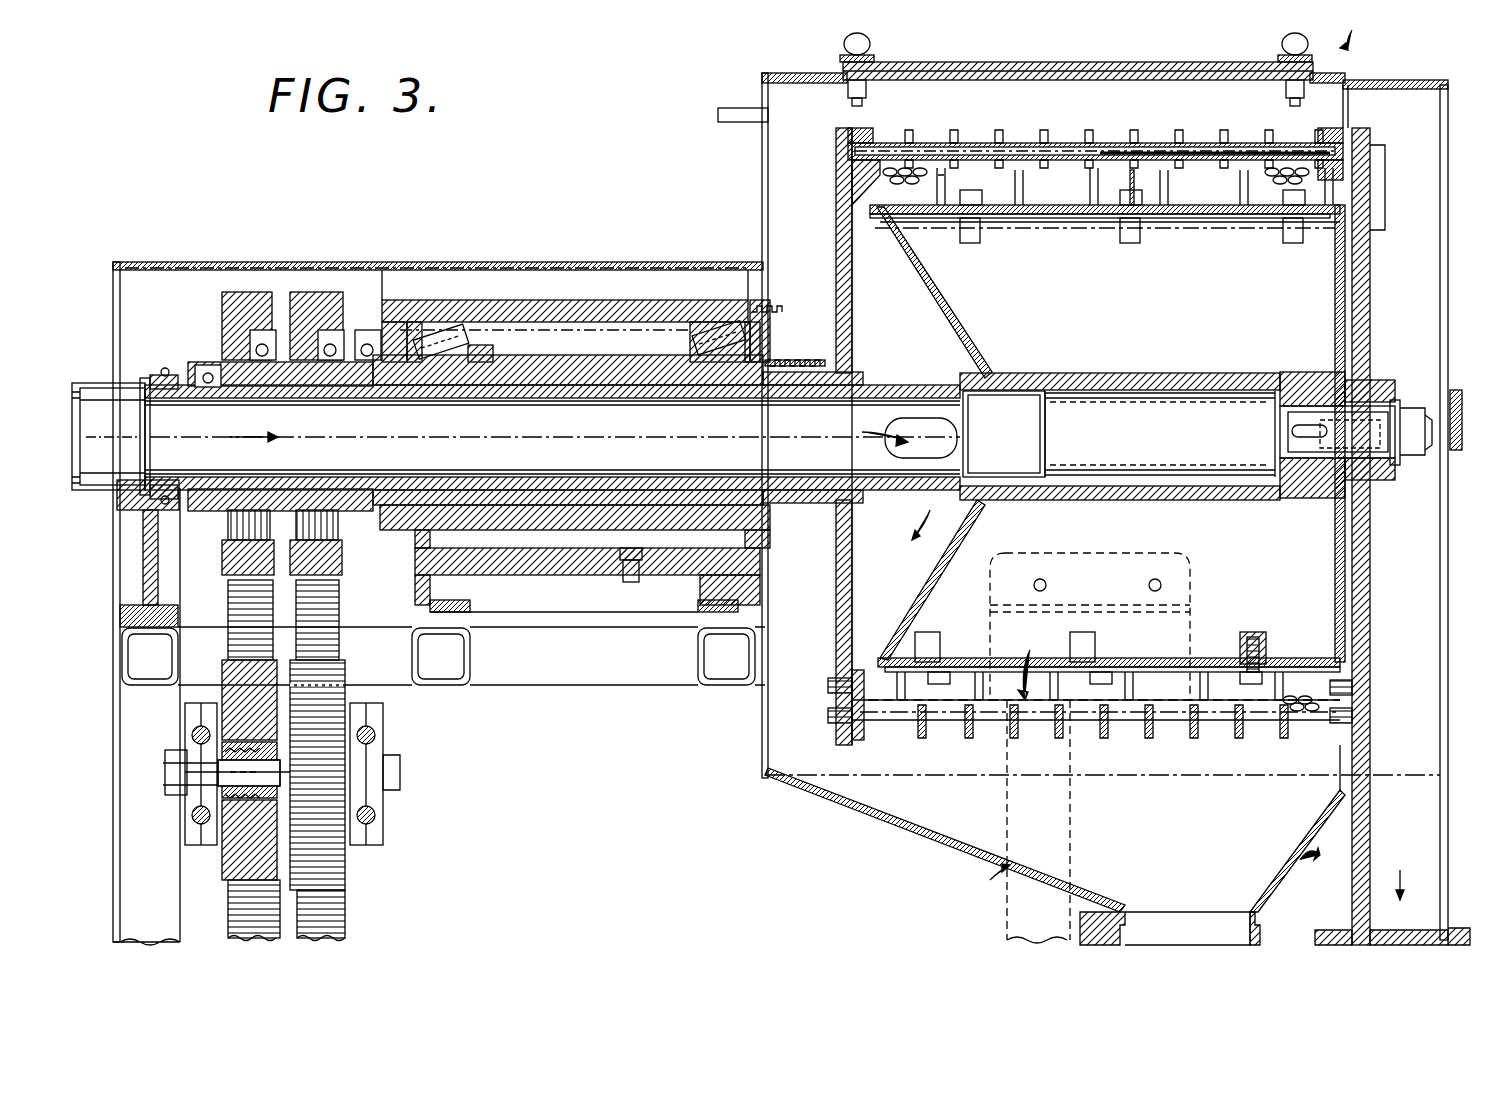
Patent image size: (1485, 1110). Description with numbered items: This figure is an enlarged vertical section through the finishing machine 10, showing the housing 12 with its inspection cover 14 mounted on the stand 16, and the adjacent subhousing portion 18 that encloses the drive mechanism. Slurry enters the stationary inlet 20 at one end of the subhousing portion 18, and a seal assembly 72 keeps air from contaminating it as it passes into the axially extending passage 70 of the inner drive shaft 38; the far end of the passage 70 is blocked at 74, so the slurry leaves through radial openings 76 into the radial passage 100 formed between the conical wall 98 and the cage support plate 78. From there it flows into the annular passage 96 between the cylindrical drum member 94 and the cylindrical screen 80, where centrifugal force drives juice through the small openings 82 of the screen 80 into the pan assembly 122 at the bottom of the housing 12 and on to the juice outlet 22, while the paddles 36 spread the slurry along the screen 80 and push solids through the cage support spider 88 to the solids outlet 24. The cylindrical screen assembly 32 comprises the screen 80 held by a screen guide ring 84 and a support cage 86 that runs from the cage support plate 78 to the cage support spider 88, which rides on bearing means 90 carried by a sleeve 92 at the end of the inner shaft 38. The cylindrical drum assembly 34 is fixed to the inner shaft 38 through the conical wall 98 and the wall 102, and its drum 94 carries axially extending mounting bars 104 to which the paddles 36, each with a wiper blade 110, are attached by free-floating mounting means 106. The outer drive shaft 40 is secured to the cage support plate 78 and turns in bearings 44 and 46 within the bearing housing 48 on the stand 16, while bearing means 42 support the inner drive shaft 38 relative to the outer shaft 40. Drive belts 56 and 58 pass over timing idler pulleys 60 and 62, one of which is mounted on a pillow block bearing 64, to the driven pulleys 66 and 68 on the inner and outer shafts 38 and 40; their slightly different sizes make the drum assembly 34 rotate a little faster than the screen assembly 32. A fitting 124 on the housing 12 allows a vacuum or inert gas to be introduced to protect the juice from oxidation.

The finishing machine 10 is at (1361, 32).
The housing 12 is at (1400, 84).
The inspection cover 14 is at (1075, 62).
The stand 16 is at (1005, 918).
The subhousing portion 18 is at (495, 265).
The inlet 20 is at (112, 478).
The juice outlet 22 is at (1210, 912).
The solids outlet 24 is at (1400, 925).
The cylindrical screen assembly 32 is at (1372, 175).
The cylindrical drum assembly 34 is at (1350, 197).
The paddles 36 is at (1025, 184).
The inner drive shaft 38 is at (545, 488).
The outer drive shaft 40 is at (632, 505).
The bearing means 42 is at (415, 385).
The bearing 44 is at (492, 340).
The bearing 46 is at (684, 340).
The bearing housing 48 is at (600, 302).
The drive belt 56 is at (228, 915).
The drive belt 58 is at (345, 902).
The timing idler pulley 60 is at (230, 678).
The timing idler pulley 62 is at (345, 682).
The pillow block bearing 64 is at (190, 722).
The driven pulley 66 is at (222, 318).
The driven pulley 68 is at (340, 312).
The axially extending passage 70 is at (395, 449).
The seal assembly 72 is at (178, 368).
The blocked end 74 is at (1000, 398).
The radial opening 76 is at (905, 448).
The cage support plate 78 is at (836, 255).
The cylindrical screen 80 is at (982, 152).
The openings 82 is at (895, 168).
The screen guide ring 84 is at (848, 182).
The support cage 86 is at (1240, 148).
The cage support spider 88 is at (1370, 262).
The bearing means 90 is at (1392, 388).
The sleeve 92 is at (1385, 488).
The cylindrical drum member 94 is at (1040, 225).
The annular passage 96 is at (835, 672).
The conical wall 98 is at (950, 320).
The radial passage 100 is at (950, 528).
The wall 102 is at (1335, 320).
The mounting bars 104 is at (1110, 215).
The free-floating mounting means 106 is at (1168, 175).
The wiper blade 110 is at (940, 165).
The pan assembly 122 is at (945, 862).
The fitting 124 is at (742, 108).